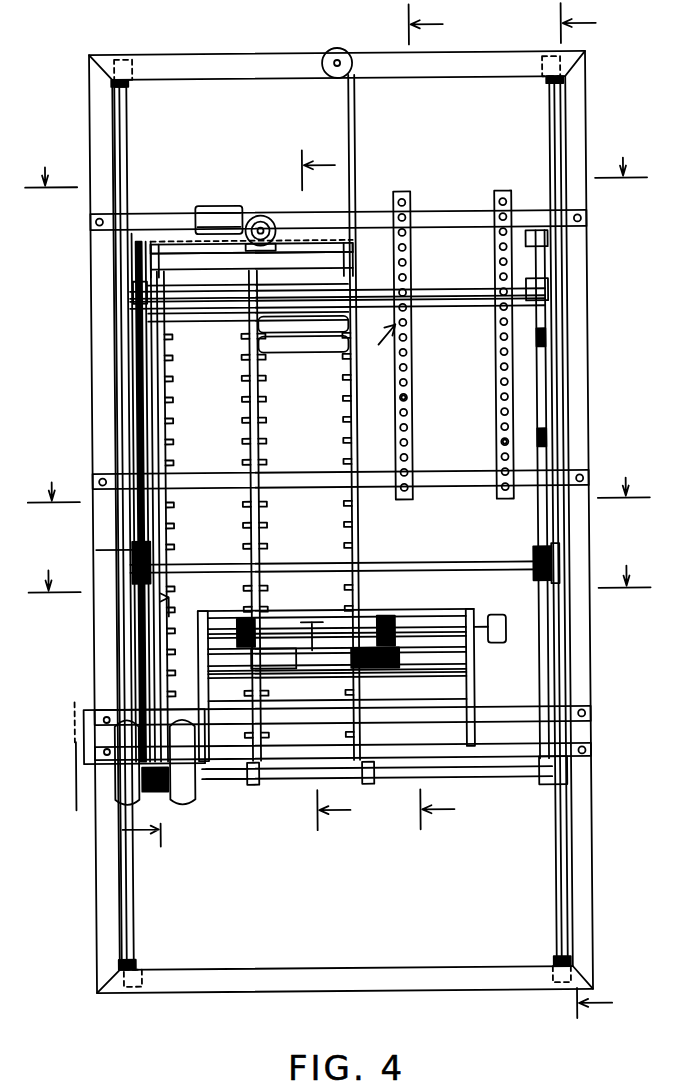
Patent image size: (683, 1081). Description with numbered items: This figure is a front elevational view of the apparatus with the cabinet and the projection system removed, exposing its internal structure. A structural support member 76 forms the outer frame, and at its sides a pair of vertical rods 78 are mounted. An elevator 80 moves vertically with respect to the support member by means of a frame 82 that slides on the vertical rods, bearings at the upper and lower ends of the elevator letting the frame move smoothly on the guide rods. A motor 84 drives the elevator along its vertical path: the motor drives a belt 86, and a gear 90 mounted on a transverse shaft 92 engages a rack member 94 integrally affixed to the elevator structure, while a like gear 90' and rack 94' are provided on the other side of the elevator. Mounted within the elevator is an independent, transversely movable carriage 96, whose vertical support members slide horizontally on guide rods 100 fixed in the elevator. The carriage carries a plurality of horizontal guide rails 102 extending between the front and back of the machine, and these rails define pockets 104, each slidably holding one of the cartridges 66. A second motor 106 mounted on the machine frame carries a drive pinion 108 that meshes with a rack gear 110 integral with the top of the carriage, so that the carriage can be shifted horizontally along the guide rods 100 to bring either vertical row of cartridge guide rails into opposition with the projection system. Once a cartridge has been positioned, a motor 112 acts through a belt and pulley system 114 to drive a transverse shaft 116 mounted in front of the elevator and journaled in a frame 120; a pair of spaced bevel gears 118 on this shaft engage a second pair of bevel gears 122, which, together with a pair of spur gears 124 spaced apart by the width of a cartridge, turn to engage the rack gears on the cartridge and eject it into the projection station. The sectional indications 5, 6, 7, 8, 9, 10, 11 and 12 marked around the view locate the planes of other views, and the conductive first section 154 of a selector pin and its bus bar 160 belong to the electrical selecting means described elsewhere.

The section line 5- 5 is at (336, 161).
The section line 6- 6 is at (338, 479).
The section line 7- 7 is at (339, 568).
The section line 8- 8 is at (595, 510).
The section line 9- 9 is at (440, 416).
The section line 10- 10 is at (331, 490).
The section line 11- 11 is at (64, 774).
The section line 12- 12 is at (160, 719).
The cartridge 66 is at (260, 343).
The structural support member 76 is at (582, 114).
The vertical rods 78 is at (130, 124).
The elevator 80 is at (443, 246).
The frame 82 is at (440, 274).
The motor 84 is at (120, 785).
The belt 86 is at (142, 650).
The gear 90 is at (97, 584).
The gear 90' is at (523, 557).
The transverse shaft 92 is at (322, 563).
The rack member 94 is at (102, 498).
The rack member 94' is at (516, 494).
The carriage 96 is at (377, 348).
The guide rods 100 is at (437, 292).
The horizontal guide rails 102 is at (350, 440).
The pockets 104 is at (168, 372).
The second motor 106 is at (220, 205).
The drive pinion 108 is at (264, 214).
The rack gear 110 is at (162, 243).
The motor 112 is at (186, 792).
The belt and pulley system 114 is at (290, 785).
The transverse shaft 116 is at (428, 620).
The bevel gears 118 is at (240, 618).
The frame 120 is at (473, 661).
The bevel gears 122 is at (286, 625).
The spur gears 124 is at (400, 656).
The first section 154 is at (408, 368).
The bus bar 160 is at (408, 396).